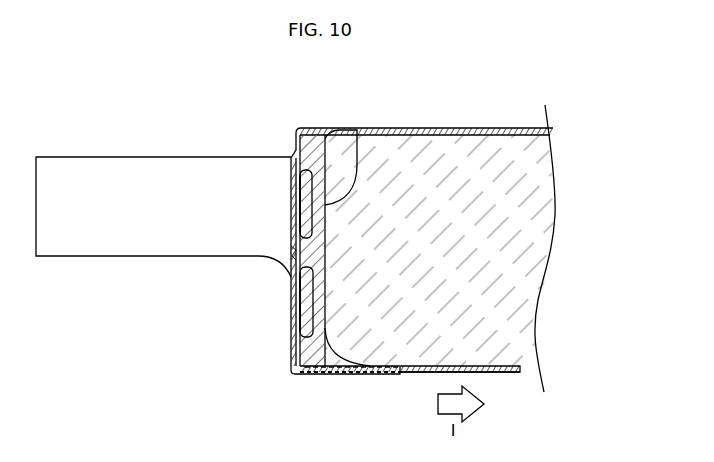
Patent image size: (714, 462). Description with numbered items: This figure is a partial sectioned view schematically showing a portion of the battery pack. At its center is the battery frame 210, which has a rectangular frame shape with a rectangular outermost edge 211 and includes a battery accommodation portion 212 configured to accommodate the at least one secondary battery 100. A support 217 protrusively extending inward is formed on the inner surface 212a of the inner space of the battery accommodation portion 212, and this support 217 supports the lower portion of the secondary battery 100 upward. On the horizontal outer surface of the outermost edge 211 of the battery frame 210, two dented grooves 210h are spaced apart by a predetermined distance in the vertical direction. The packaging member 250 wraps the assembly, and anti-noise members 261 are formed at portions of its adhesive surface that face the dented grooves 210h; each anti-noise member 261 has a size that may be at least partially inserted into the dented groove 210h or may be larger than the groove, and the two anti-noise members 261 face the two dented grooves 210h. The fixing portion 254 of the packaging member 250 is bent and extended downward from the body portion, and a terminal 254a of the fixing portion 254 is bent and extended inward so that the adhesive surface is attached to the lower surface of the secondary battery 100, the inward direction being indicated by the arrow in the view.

The secondary battery 100 is at (493, 150).
The battery frame 210 is at (270, 340).
The dented groove 210h is at (300, 187).
The outermost edge 211 is at (302, 150).
The battery accommodation portion 212 is at (552, 150).
The inner surface 212a is at (356, 160).
The support 217 is at (390, 356).
The packaging member 250 is at (448, 130).
The fixing portion 254 is at (297, 372).
The terminal 254a is at (503, 377).
The anti-noise member 261 is at (300, 213).